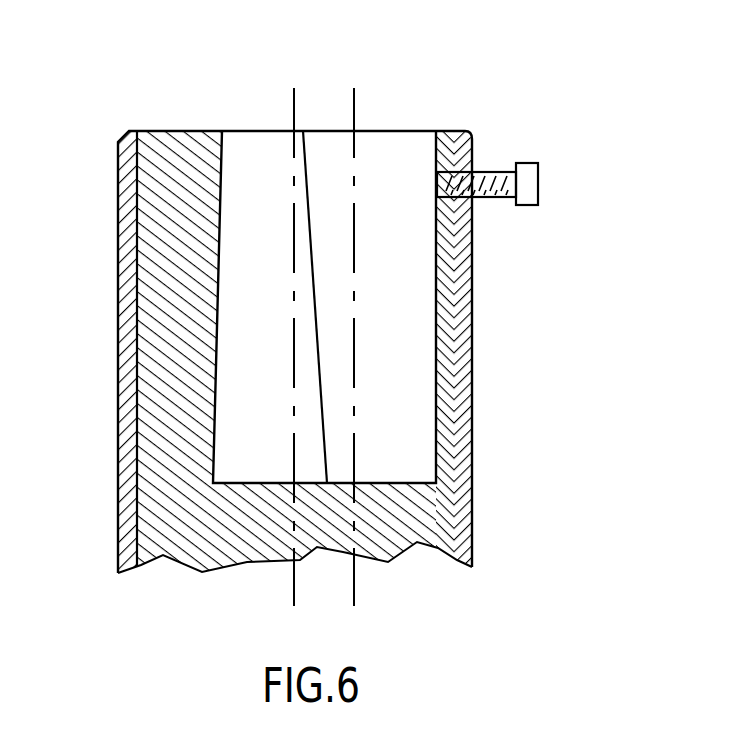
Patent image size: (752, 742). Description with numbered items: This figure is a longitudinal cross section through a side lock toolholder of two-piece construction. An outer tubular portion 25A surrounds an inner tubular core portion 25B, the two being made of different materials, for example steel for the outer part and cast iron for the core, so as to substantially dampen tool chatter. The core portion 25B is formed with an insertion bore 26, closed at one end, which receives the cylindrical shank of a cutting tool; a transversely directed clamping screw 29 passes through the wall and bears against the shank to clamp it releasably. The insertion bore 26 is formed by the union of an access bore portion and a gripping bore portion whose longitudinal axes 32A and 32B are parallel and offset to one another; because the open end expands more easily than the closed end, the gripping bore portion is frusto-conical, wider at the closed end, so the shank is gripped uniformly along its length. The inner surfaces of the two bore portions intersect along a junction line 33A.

The outer tubular portion 25A is at (462, 312).
The inner tubular core portion 25B is at (154, 303).
The insertion bore 26 is at (400, 420).
The clamping screw 29 is at (542, 182).
The longitudinal axis of access bore portion 32A is at (353, 113).
The longitudinal axis of gripping bore portion 32B is at (293, 110).
The junction line 33A is at (307, 173).